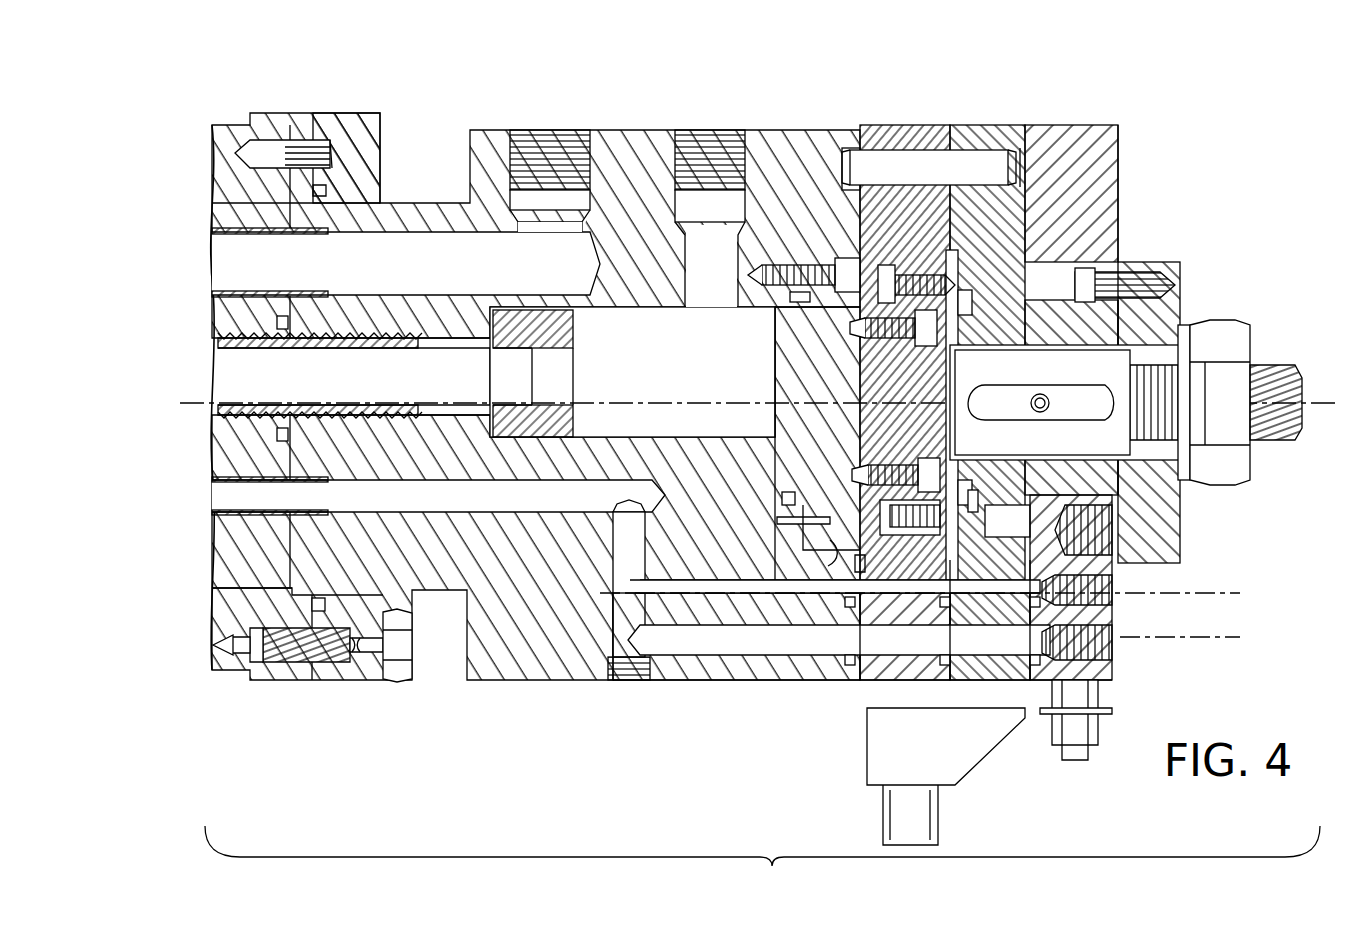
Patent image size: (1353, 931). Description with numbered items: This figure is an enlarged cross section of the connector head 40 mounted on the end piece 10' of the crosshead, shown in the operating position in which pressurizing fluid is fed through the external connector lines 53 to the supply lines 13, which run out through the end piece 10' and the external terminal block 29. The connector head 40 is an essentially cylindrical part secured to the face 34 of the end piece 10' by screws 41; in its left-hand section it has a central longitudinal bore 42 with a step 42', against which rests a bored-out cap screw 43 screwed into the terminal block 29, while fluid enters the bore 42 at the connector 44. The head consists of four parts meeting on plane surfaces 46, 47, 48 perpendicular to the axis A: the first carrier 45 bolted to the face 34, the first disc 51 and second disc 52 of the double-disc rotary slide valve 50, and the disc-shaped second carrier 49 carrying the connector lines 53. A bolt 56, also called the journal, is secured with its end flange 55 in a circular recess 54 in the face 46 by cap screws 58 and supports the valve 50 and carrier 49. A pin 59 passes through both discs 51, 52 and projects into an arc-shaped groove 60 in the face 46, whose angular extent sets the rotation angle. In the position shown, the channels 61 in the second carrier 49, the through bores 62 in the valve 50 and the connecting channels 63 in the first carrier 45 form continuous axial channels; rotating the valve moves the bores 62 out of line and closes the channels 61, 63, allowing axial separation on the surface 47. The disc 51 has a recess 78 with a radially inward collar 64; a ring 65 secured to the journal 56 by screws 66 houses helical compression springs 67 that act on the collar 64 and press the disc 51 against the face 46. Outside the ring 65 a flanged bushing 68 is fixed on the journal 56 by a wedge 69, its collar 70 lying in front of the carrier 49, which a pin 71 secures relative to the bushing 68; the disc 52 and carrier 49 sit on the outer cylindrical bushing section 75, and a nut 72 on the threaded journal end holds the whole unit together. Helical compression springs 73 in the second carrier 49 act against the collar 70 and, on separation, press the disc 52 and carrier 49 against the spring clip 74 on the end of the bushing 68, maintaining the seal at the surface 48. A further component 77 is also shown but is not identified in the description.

The end piece 10' is at (524, 369).
The supply lines 13 is at (218, 496).
The external terminal block 29 is at (235, 548).
The face 34 is at (318, 120).
The connector head 40 is at (762, 863).
The screws 41 is at (322, 664).
The central longitudinal bore 42 is at (632, 372).
The step 42' is at (354, 337).
The bored-out cap screw 43 is at (545, 327).
The connector 44 is at (692, 140).
The first carrier 45 is at (570, 648).
The right-hand face of first carrier 46 is at (867, 110).
The separation surface 47 is at (957, 110).
The right-hand face of rotary slide valve 48 is at (1031, 110).
The second carrier 49 is at (1085, 145).
The double-disc rotary slide valve 50 is at (858, 62).
The first disc 51 is at (865, 680).
The second disc 52 is at (1012, 672).
The external connector lines 53 is at (1228, 598).
The recess 54 is at (778, 412).
The end flange 55 is at (828, 566).
The bolt 56 is at (1118, 340).
The cap screws 58 is at (796, 255).
The pin 59 is at (930, 160).
The arc-shaped groove 60 is at (840, 165).
The channels 61 is at (1010, 637).
The through bores 62 is at (993, 642).
The connecting channels 63 is at (734, 642).
The collar 64 is at (873, 295).
The ring 65 is at (912, 350).
The screws 66 is at (893, 345).
The helical compression springs 67 is at (912, 275).
The flanged bushing 68 is at (1198, 556).
The wedge 69 is at (1070, 386).
The collar of flanged bushing 70 is at (1118, 272).
The pin 71 is at (1148, 285).
The nut 72 is at (1222, 345).
The helical compression springs 73 is at (1095, 533).
The spring clip 74 is at (1018, 548).
The outer cylindrical bushing section 75 is at (1012, 355).
The bracket 77 is at (890, 748).
The recess 78 is at (958, 283).
The axis A is at (597, 402).